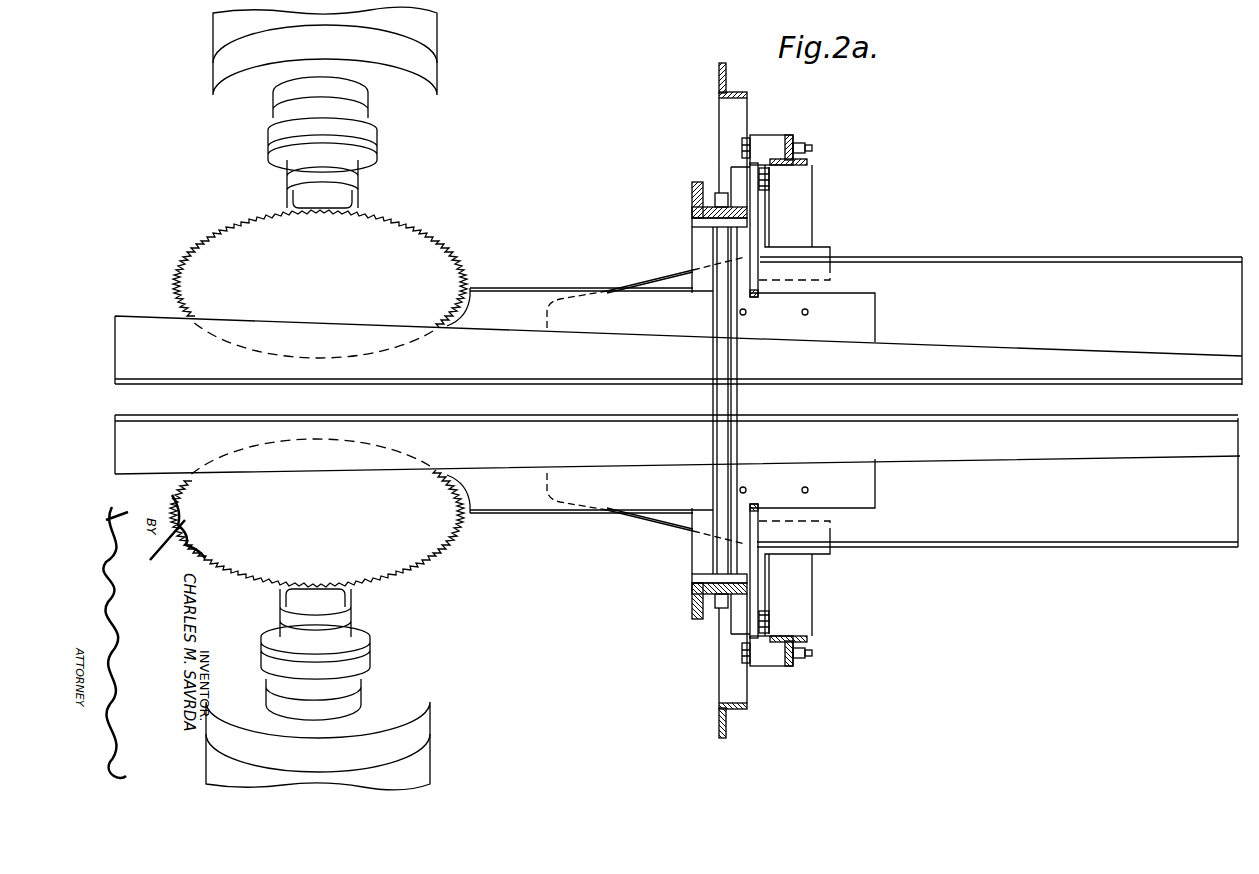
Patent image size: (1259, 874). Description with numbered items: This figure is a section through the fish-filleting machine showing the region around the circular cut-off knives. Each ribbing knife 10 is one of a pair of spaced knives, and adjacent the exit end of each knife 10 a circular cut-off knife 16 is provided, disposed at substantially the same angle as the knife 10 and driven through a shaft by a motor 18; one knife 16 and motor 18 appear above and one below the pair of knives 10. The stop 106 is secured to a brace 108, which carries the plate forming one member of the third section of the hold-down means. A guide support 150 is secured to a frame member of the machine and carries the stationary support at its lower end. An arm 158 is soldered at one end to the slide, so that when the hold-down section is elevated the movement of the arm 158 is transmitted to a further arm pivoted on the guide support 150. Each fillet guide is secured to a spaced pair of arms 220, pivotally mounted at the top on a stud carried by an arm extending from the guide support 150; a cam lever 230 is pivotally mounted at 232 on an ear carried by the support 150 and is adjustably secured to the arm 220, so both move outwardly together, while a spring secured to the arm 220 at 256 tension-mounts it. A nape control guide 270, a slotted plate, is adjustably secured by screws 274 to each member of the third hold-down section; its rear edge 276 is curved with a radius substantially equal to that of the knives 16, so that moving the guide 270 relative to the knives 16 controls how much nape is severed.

The ribbing knife 10 is at (998, 388).
The circular cut-off knife 16 is at (432, 246).
The motor 18 is at (430, 48).
The stop 106 is at (1103, 268).
The brace 108 is at (1017, 258).
The guide support 150 is at (692, 197).
The arm 158 is at (722, 115).
The arm 220 is at (804, 192).
The cam lever 230 is at (757, 232).
The pivot 232 is at (769, 178).
The spring attachment point 256 is at (775, 140).
The nape control guide 270 is at (569, 290).
The screws 274 is at (802, 314).
The rear edge 276 is at (492, 288).